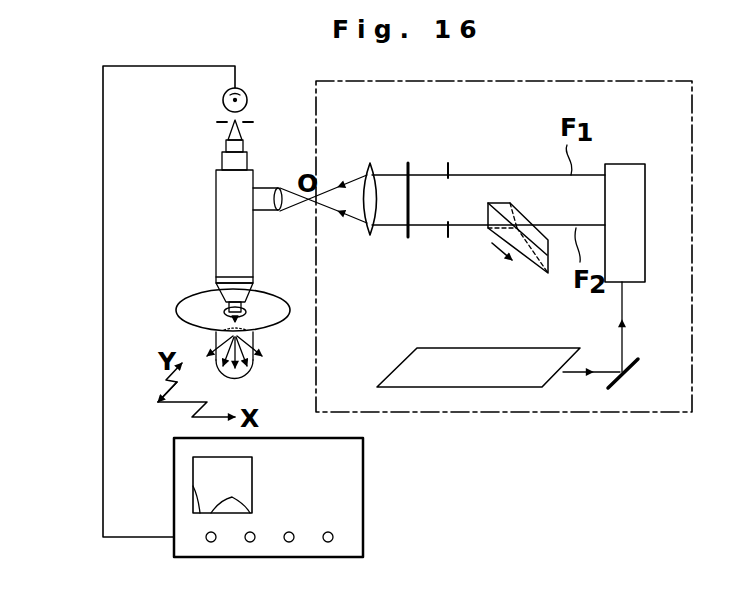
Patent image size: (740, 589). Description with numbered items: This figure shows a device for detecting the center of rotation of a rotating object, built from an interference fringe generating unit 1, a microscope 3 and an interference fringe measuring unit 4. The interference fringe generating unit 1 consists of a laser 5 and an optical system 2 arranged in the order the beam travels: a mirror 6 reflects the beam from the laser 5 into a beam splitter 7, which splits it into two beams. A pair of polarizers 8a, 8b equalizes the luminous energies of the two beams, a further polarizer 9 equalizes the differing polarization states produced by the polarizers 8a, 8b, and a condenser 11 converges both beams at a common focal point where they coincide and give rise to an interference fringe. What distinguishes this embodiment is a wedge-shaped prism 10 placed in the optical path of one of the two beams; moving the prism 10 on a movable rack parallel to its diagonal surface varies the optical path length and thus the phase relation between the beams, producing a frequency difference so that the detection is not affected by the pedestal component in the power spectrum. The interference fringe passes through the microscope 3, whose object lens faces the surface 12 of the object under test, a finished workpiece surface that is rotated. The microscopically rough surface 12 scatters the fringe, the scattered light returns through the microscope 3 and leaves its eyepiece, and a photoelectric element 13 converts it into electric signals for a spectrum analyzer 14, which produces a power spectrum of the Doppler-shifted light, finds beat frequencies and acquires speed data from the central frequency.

The interference fringe generating unit 1 is at (570, 415).
The optical system 2 is at (512, 164).
The microscope 3 is at (214, 213).
The interference fringe measuring unit 4 is at (90, 428).
The laser 5 is at (470, 348).
The mirror 6 is at (633, 366).
The beam splitter 7 is at (626, 176).
The polarizer 8a is at (449, 162).
The polarizer 8b is at (447, 238).
The polarizer 9 is at (407, 162).
The wedge-shaped prism 10 is at (534, 262).
The condenser 11 is at (368, 237).
The surface of an object under test 12 is at (189, 302).
The photoelectric element 13 is at (222, 100).
The spectrum analyzer 14 is at (363, 484).